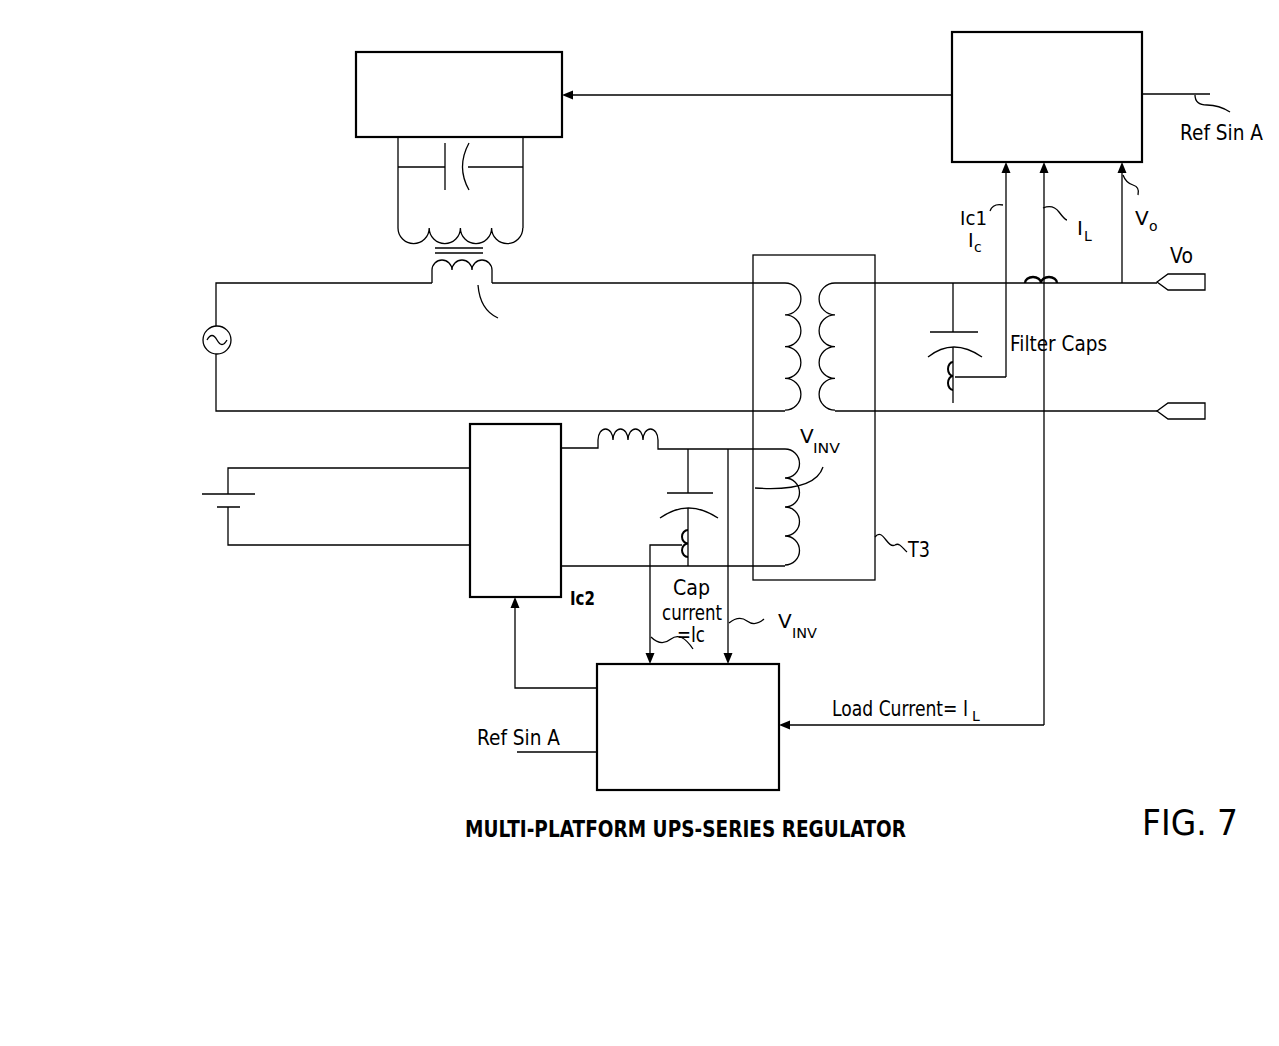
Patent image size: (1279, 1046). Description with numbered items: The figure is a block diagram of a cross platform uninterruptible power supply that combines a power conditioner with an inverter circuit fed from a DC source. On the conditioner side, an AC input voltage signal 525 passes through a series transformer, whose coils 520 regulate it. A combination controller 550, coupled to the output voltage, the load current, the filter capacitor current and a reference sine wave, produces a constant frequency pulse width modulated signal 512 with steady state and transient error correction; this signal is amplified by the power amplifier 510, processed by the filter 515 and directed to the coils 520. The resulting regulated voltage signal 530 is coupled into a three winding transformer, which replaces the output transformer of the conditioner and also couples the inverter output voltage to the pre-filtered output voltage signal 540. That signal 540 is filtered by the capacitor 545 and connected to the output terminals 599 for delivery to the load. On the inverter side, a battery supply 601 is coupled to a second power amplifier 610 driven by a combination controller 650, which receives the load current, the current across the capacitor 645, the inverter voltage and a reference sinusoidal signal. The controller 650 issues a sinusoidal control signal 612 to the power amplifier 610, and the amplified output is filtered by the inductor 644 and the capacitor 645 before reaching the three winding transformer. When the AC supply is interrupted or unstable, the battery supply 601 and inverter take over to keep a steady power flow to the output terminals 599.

The power amplifier 510 is at (552, 124).
The constant frequency pulse width modulated signal 512 is at (740, 96).
The filter 515 is at (533, 153).
The coils of transformer T1 520 is at (413, 242).
The input voltage signal 525 is at (258, 283).
The regulated voltage signal 530 is at (620, 283).
The pre-filtered output voltage signal 540 is at (908, 412).
The capacitor 545 is at (945, 332).
The combination controller 550 is at (1130, 151).
The output terminals 599 is at (1187, 290).
The battery supply 601 is at (218, 493).
The power amplifier 610 is at (550, 584).
The sinusoidal control signal 612 is at (515, 663).
The inductor 644 is at (662, 438).
The capacitor 645 is at (680, 493).
The combination controller 650 is at (768, 781).